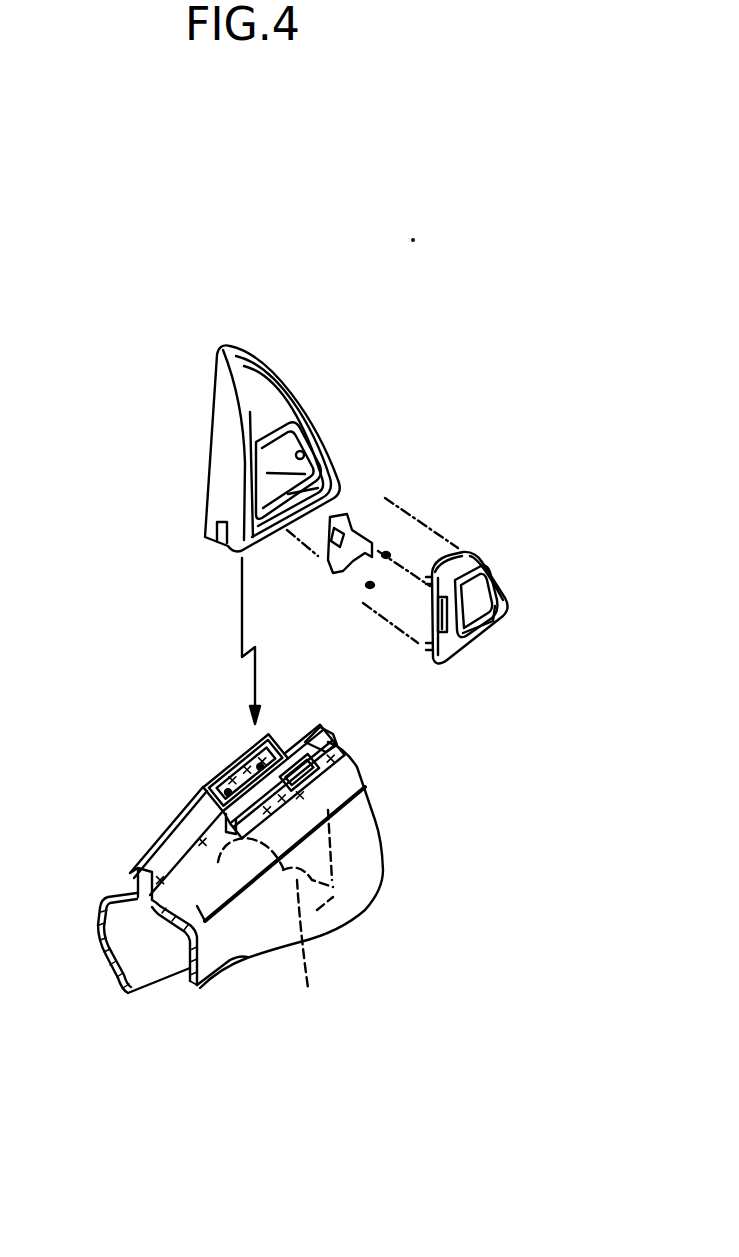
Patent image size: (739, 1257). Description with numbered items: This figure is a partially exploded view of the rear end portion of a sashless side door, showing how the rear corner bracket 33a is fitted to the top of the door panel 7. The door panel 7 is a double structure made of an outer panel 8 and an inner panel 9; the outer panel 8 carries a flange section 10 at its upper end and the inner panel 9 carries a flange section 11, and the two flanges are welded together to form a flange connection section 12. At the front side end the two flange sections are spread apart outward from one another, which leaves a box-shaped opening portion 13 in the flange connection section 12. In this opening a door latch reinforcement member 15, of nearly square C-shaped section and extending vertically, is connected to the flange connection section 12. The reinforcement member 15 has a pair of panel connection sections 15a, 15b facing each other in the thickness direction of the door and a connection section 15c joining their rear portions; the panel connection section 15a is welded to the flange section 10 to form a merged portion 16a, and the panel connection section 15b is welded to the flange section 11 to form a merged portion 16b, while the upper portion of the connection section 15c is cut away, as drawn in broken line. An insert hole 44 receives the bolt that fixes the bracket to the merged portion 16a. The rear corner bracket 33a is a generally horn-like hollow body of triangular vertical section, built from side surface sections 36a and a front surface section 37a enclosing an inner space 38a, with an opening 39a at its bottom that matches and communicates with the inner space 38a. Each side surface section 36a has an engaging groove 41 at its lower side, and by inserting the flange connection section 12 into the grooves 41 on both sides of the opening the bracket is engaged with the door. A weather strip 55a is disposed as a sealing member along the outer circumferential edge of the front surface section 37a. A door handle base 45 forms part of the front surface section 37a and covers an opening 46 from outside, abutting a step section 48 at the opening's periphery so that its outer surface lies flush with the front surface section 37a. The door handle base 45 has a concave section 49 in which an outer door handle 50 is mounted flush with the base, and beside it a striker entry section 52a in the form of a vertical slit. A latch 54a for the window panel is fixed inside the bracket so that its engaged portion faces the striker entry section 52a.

The door panel 7 is at (162, 1001).
The outer panel 8 is at (227, 957).
The inner panel 9 is at (110, 972).
The flange section 10 is at (258, 765).
The flange section 11 is at (237, 757).
The flange connection section 12 is at (135, 886).
The box-shaped opening portion 13 is at (287, 748).
The door latch reinforcement member 15 is at (330, 883).
The panel connection section 15a is at (305, 783).
The panel connection section 15b is at (227, 767).
The connection section 15c is at (317, 952).
The merged portion 16a is at (290, 797).
The merged portion 16b is at (215, 776).
The rear corner bracket 33a is at (273, 363).
The side surface section 36a is at (223, 471).
The front surface section 37a is at (280, 400).
The inner space 38a is at (263, 472).
The opening 39a is at (320, 505).
The engaging groove 41 is at (213, 531).
The insert hole 44 is at (260, 763).
The door handle base 45 is at (507, 598).
The opening 46 is at (310, 462).
The step section 48 is at (327, 497).
The concave section 49 is at (487, 615).
The outer door handle 50 is at (477, 587).
The striker entry section 52a is at (455, 608).
The latch 54a is at (334, 557).
The weather strip 55a is at (237, 412).